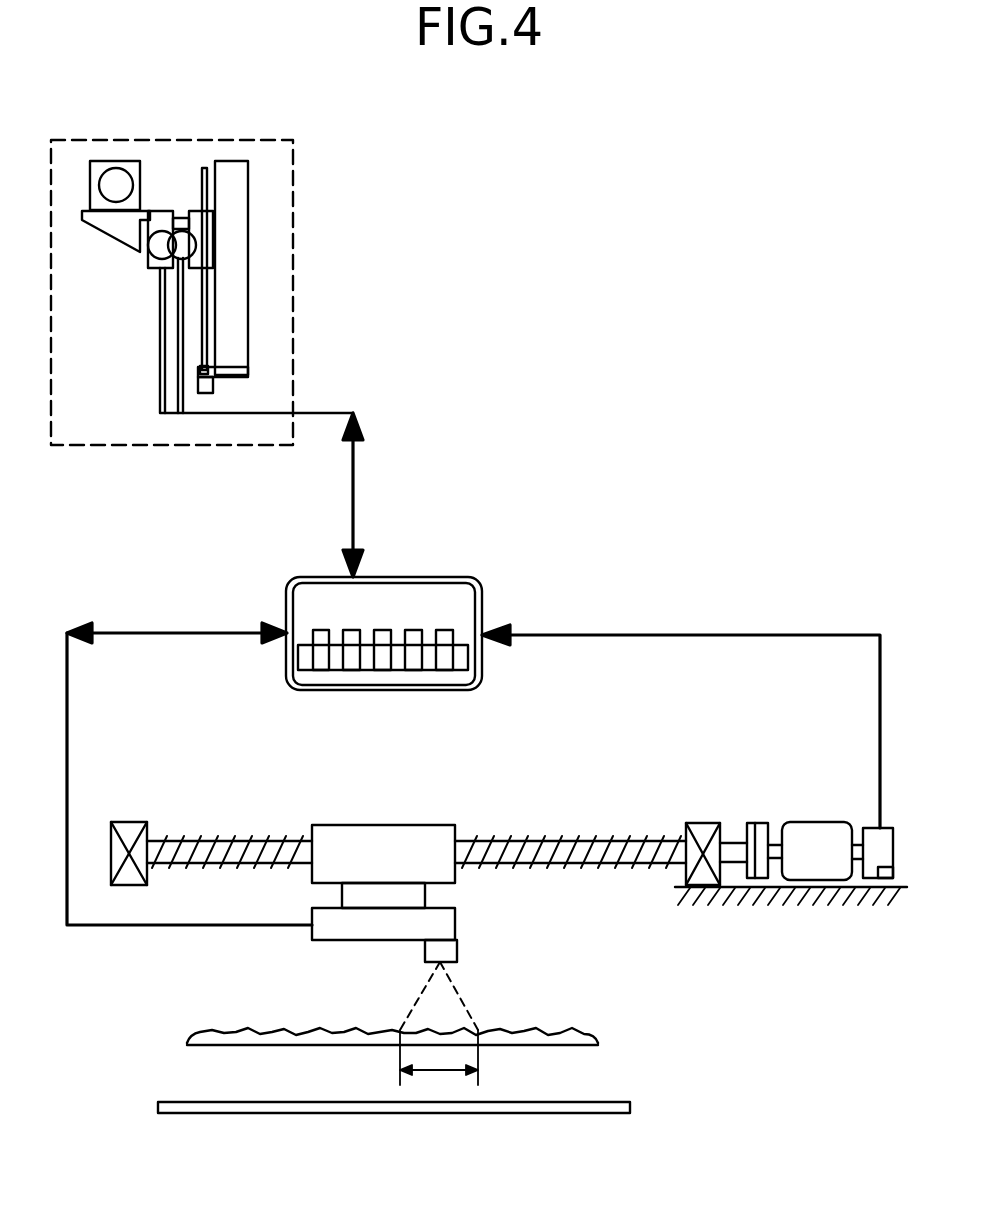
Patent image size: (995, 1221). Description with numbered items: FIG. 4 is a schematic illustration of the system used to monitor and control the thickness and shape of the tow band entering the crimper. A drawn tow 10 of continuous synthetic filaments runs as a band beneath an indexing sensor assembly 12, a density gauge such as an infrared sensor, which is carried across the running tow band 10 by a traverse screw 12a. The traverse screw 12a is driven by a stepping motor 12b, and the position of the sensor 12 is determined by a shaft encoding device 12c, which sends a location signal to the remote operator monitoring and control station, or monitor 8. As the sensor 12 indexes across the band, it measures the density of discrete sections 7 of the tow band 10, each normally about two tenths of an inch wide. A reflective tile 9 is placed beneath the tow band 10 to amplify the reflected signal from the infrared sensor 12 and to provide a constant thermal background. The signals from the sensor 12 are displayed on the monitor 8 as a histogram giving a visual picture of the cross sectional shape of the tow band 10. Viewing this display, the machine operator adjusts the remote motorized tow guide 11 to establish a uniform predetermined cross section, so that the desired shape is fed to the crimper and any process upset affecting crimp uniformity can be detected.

The discrete sections 7 is at (400, 1070).
The monitor 8 is at (432, 577).
The reflective tile 9 is at (185, 1102).
The tow 10 is at (223, 1030).
The motorized tow guide 11 is at (158, 433).
The indexing sensor assembly 12 is at (337, 940).
The traverse screw 12a is at (562, 840).
The stepping motor 12b is at (795, 822).
The shaft encoding device 12c is at (873, 828).